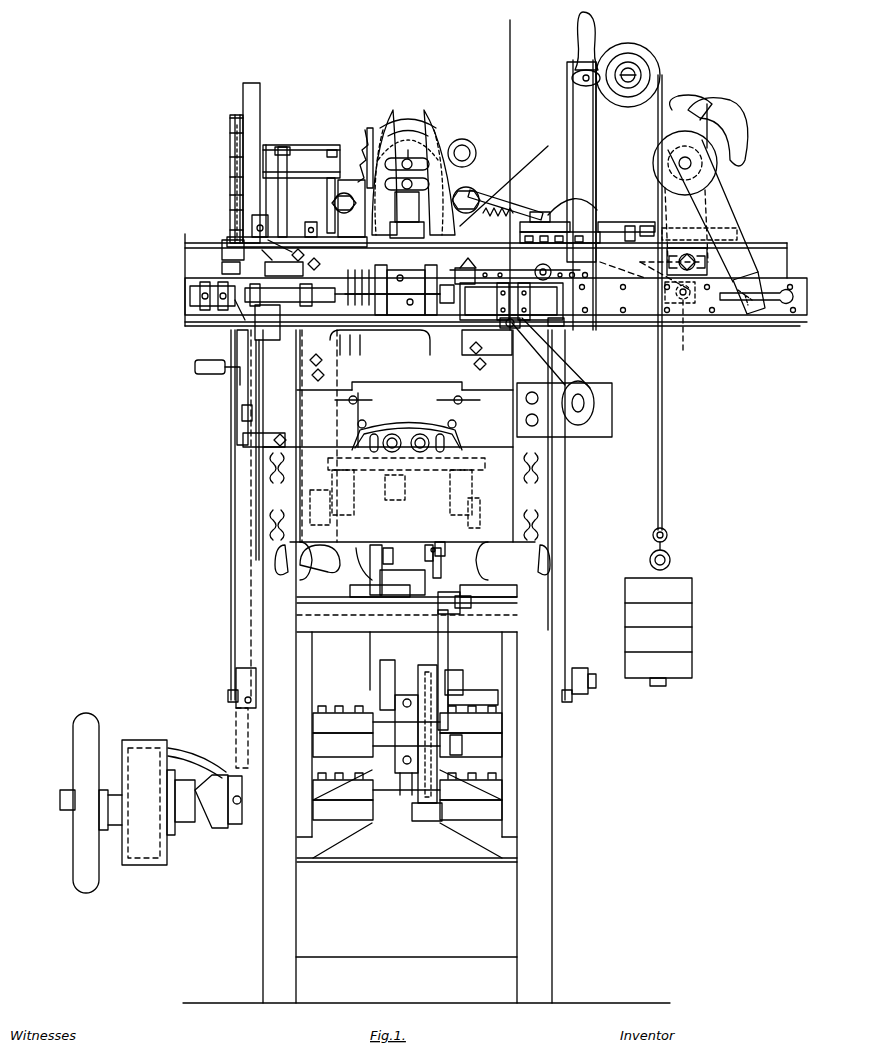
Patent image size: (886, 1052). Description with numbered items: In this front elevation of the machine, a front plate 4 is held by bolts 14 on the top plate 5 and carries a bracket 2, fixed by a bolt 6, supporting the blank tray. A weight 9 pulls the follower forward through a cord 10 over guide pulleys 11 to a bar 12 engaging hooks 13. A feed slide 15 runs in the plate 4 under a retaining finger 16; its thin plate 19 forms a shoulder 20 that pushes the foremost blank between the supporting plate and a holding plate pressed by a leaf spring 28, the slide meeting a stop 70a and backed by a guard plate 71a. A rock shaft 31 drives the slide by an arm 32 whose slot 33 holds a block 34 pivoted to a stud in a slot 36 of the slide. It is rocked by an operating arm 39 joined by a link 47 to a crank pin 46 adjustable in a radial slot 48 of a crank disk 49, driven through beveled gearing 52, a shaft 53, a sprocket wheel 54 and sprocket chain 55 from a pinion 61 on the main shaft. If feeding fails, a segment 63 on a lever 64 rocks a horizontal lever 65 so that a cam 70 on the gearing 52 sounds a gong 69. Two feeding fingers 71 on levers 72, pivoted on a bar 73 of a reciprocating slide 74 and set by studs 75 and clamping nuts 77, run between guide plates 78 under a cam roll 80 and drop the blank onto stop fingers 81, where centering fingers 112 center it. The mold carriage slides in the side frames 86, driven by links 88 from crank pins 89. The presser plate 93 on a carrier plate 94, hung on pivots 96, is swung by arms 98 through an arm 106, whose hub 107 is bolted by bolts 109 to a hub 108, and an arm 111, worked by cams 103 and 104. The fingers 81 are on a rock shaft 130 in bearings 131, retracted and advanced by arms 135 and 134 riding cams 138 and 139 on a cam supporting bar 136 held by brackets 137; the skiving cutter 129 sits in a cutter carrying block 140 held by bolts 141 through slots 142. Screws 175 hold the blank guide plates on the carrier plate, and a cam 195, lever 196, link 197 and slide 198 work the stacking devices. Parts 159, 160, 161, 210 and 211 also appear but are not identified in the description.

The frame standard 2 is at (585, 195).
The bed plate 4 is at (740, 242).
The fly wheel 5 is at (154, 800).
The standard rod 6 is at (560, 272).
The weight 9 is at (690, 592).
The cord 10 is at (660, 456).
The pulley 11 is at (655, 62).
The slide 12 is at (505, 355).
The bearing block 13 is at (495, 302).
The lever 14 is at (538, 208).
The guide rail 15 is at (572, 290).
The pivot stud 16 is at (555, 250).
The stud 19 is at (698, 314).
The rail 20 is at (575, 312).
The bracket 28 is at (406, 292).
The pulley 31 is at (695, 165).
The arm 32 is at (722, 210).
The link 33 is at (750, 275).
The arm end 34 is at (748, 322).
The slot 36 is at (770, 298).
The pin 39 is at (688, 345).
The roller 46 is at (468, 140).
The link 47 is at (440, 235).
The arm 48 is at (455, 128).
The arm 49 is at (435, 130).
The cam jaw 52 is at (372, 128).
The cam jaw 53 is at (365, 135).
The rack 54 is at (232, 130).
The rack guide 55 is at (232, 192).
The spring 61 is at (480, 235).
The casing 63 is at (745, 150).
The cover 64 is at (708, 124).
The bar 65 is at (605, 225).
The handle 69 is at (585, 195).
The stop 70 is at (632, 228).
The stop 70a is at (222, 262).
The spring plate 71 is at (378, 270).
The plate 71a is at (300, 262).
The lever 72 is at (455, 230).
The lever 73 is at (520, 190).
The pivot 74 is at (408, 90).
The link 75 is at (408, 150).
The link 77 is at (408, 140).
The link 78 is at (386, 120).
The bracket 80 is at (405, 210).
The guide 81 is at (380, 355).
The frame leg 86 is at (268, 890).
The guide bar 88 is at (248, 555).
The bracket 89 is at (232, 684).
The post 93 is at (300, 374).
The rod 94 is at (300, 424).
The slide 96 is at (336, 478).
The cam 98 is at (338, 560).
The clamp jaw 103 is at (432, 820).
The clamp jaw 104 is at (392, 820).
The rod 106 is at (440, 640).
The block 107 is at (432, 575).
The screw 108 is at (440, 545).
The pin 109 is at (430, 528).
The housing 111 is at (370, 662).
The bolt 112 is at (310, 372).
The yoke 129 is at (420, 425).
The bolt 130 is at (308, 258).
The arm 131 is at (205, 303).
The shaft 134 is at (228, 300).
The block 135 is at (262, 314).
The stop 136 is at (238, 412).
The plate 137 is at (238, 442).
The lever 138 is at (238, 392).
The bearing 139 is at (220, 283).
The body 140 is at (545, 505).
The roller 141 is at (420, 455).
The slot 142 is at (442, 452).
The bolt 159 is at (278, 160).
The plate 160 is at (256, 160).
The standard 161 is at (252, 92).
The rod 175 is at (372, 400).
The slide bar 195 is at (422, 800).
The plates 196 is at (450, 708).
The guide 197 is at (462, 618).
The nut 198 is at (478, 598).
The bearing 210 is at (572, 326).
The bearing cap 211 is at (560, 320).